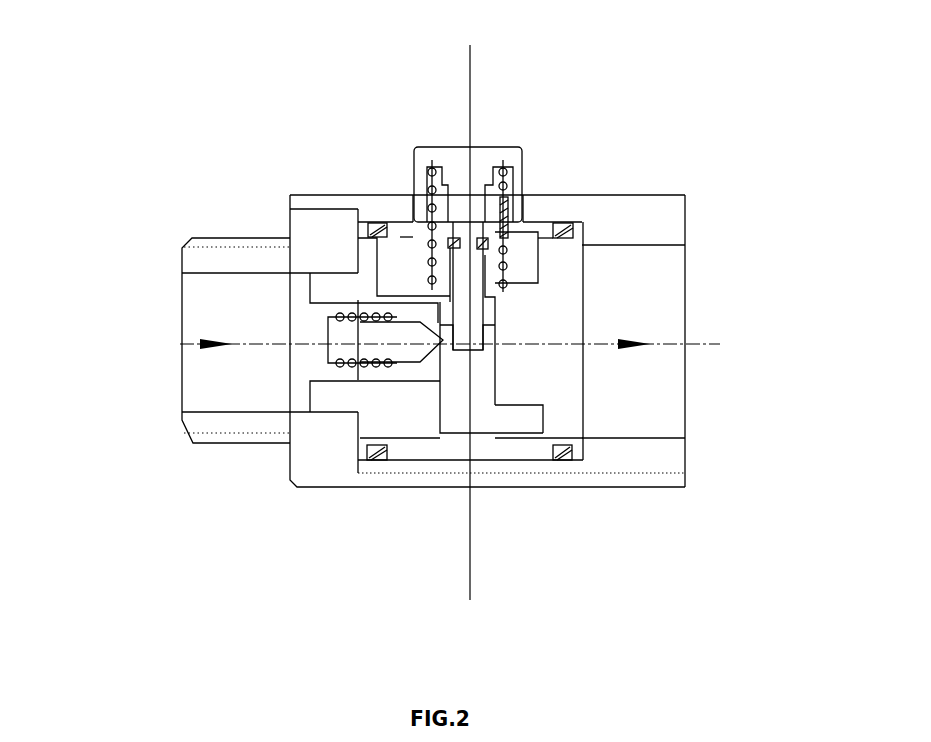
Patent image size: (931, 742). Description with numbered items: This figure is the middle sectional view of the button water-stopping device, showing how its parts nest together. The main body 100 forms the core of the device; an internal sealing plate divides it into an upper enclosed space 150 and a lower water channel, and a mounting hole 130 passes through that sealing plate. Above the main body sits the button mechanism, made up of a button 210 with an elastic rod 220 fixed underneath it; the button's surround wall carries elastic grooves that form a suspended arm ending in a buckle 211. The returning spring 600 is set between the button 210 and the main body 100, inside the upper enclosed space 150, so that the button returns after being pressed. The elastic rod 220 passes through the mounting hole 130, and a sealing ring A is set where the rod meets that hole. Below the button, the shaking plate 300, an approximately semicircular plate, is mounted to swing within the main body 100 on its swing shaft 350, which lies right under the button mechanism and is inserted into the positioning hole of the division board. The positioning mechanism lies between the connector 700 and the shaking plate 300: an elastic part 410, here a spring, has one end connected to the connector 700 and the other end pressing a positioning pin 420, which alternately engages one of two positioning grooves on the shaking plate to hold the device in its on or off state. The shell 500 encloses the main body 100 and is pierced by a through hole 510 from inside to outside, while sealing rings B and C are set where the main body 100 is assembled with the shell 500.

The main body 100 is at (560, 291).
The mounting hole 130 is at (485, 257).
The upper enclosed space 150 is at (410, 250).
The button 210 is at (483, 148).
The buckle 211 is at (510, 232).
The elastic rod 220 is at (497, 276).
The shaking plate 300 is at (463, 410).
The swing shaft 350 is at (522, 418).
The elastic part 410 is at (330, 365).
The positioning pin 420 is at (410, 360).
The shell 500 is at (647, 463).
The through hole 510 is at (413, 195).
The returning spring 600 is at (505, 197).
The connector 700 is at (190, 264).
The sealing ring A is at (433, 155).
The sealing ring B is at (370, 224).
The sealing ring C is at (562, 462).